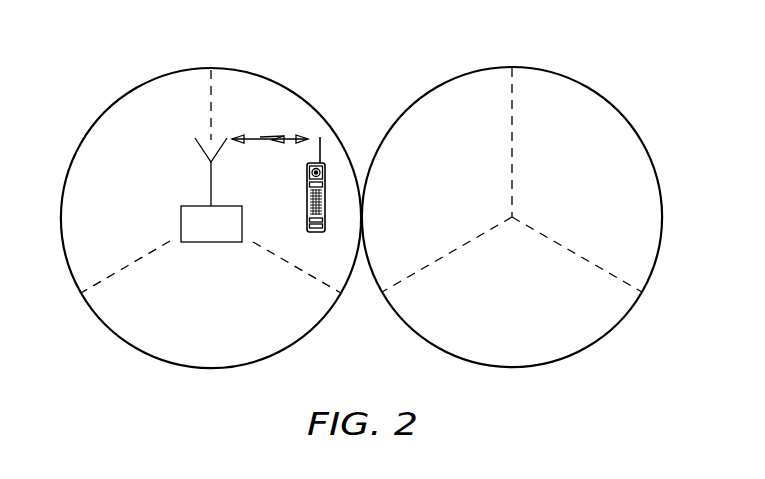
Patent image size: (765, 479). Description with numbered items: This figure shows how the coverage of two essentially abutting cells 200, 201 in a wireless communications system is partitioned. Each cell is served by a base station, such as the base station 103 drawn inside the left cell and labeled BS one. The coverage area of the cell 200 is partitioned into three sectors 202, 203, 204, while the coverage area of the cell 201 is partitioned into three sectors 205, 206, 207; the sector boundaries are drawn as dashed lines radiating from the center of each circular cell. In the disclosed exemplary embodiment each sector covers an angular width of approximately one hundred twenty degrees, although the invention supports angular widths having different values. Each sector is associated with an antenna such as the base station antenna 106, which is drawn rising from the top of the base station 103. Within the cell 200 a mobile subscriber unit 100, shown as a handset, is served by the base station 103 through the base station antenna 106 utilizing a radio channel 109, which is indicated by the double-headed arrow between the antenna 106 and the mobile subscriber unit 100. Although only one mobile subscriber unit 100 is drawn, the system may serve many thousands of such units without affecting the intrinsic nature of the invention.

The cell 200 is at (159, 66).
The cell 201 is at (566, 65).
The sector 202 is at (97, 125).
The sector 203 is at (327, 125).
The sector 204 is at (131, 336).
The sector 205 is at (390, 132).
The sector 206 is at (628, 127).
The sector 207 is at (597, 335).
The base station antenna 106 is at (195, 139).
The base station 103 is at (209, 242).
The mobile subscriber unit 100 is at (307, 224).
The radio channel 109 is at (277, 143).